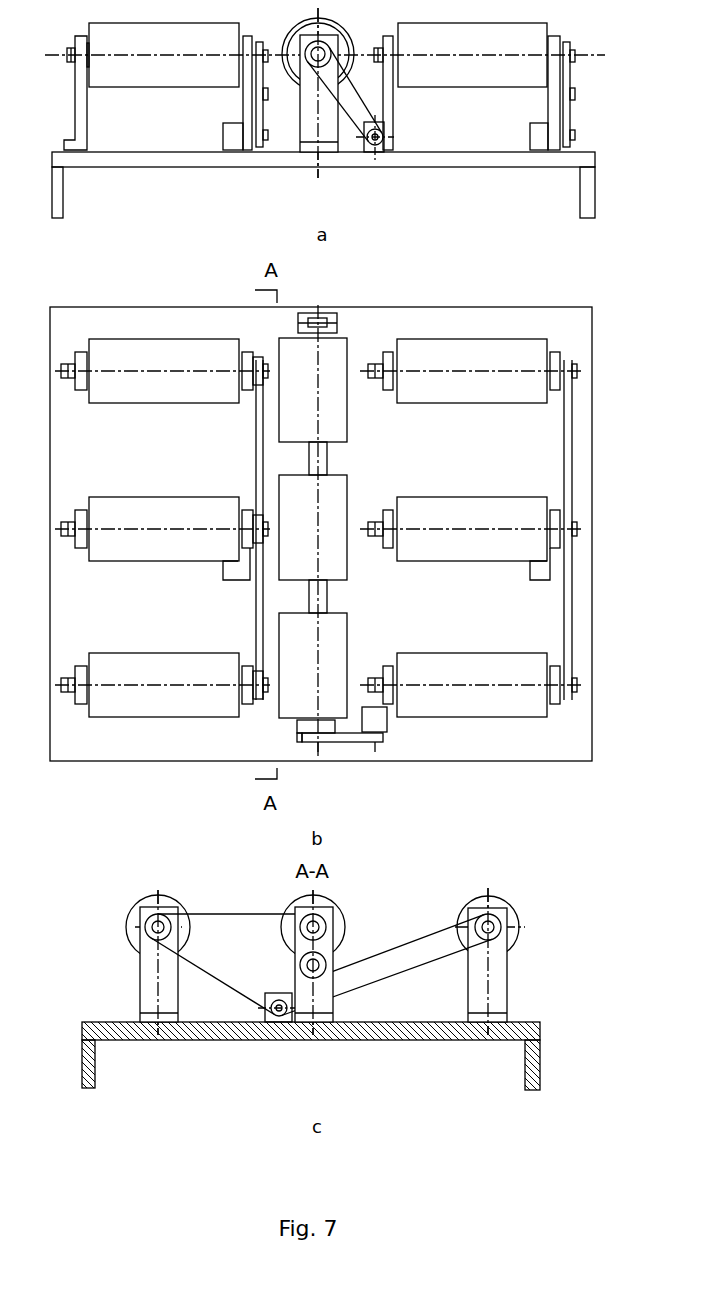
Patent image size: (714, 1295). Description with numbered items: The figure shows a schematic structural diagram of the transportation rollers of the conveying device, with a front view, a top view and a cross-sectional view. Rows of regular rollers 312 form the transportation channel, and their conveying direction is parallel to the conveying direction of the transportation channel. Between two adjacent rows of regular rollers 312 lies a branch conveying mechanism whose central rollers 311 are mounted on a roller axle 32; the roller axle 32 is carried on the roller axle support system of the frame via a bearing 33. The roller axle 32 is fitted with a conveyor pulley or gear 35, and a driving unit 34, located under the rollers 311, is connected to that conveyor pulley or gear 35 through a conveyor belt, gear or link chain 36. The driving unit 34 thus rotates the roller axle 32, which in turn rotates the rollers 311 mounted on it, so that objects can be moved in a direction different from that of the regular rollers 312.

The roller axle 32 is at (298, 331).
The drive roller 311 is at (398, 440).
The regular rollers 312 is at (203, 478).
The bearing 33 is at (333, 908).
The driving unit 34 is at (363, 708).
The conveyor pulley or gear 35 is at (302, 740).
The conveyor belt, gear or link chain 36 is at (415, 759).